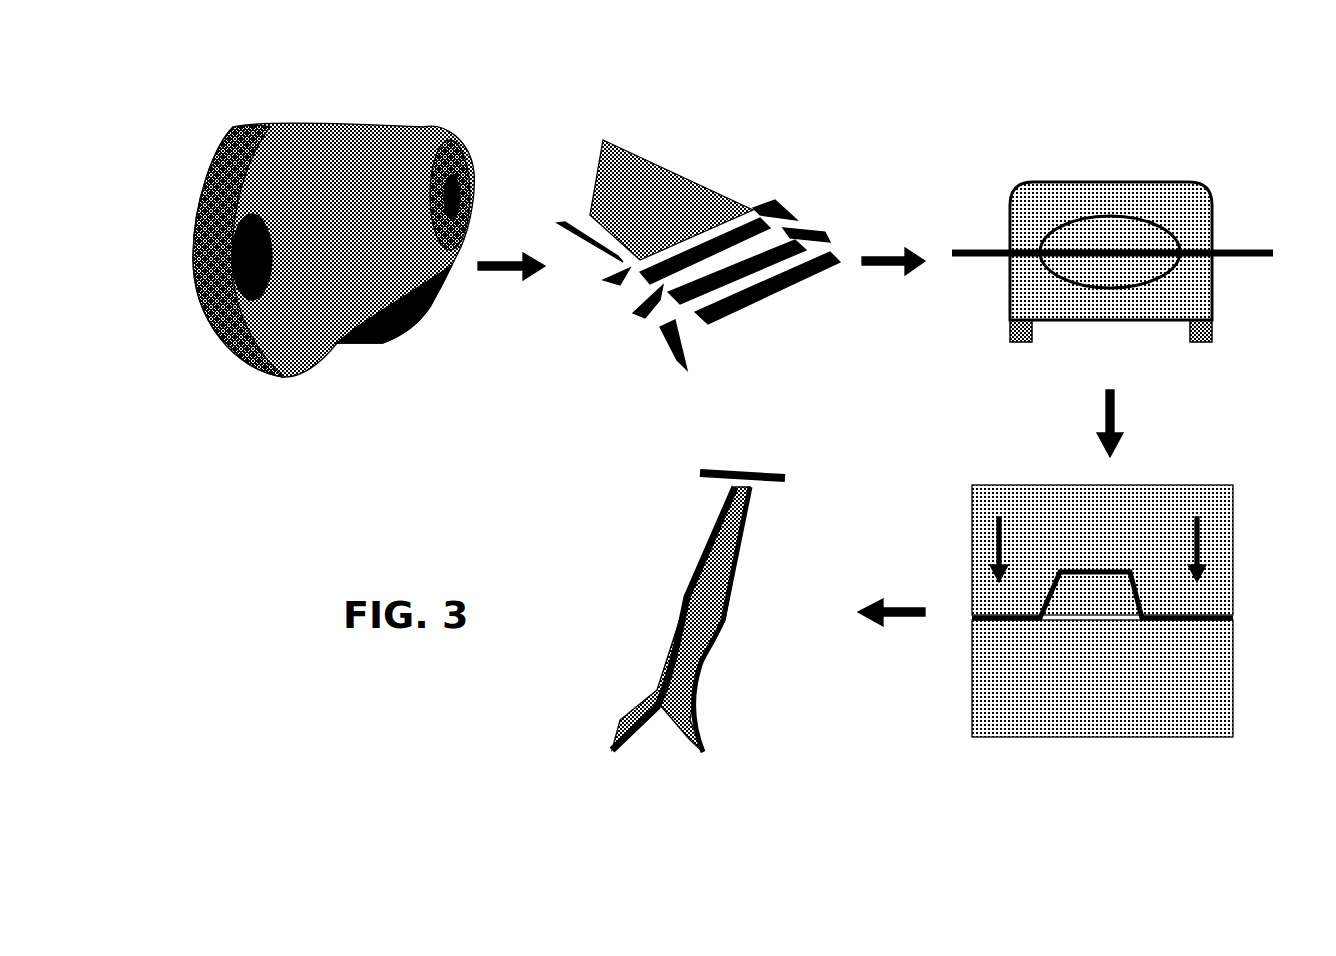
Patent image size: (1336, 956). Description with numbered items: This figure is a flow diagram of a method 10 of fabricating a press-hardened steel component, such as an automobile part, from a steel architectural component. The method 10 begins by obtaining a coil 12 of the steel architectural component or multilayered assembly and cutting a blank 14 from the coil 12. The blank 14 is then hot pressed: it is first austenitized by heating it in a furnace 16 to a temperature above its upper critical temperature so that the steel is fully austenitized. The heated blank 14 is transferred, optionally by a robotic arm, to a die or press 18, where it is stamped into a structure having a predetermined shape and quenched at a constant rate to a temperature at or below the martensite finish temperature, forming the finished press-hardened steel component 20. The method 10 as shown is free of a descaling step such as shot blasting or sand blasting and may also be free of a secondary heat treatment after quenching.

The method 10 is at (992, 93).
The coil 12 is at (373, 343).
The blank 14 is at (767, 300).
The furnace 16 is at (1080, 320).
The die or press 18 is at (1067, 737).
The formed part 20 is at (713, 630).